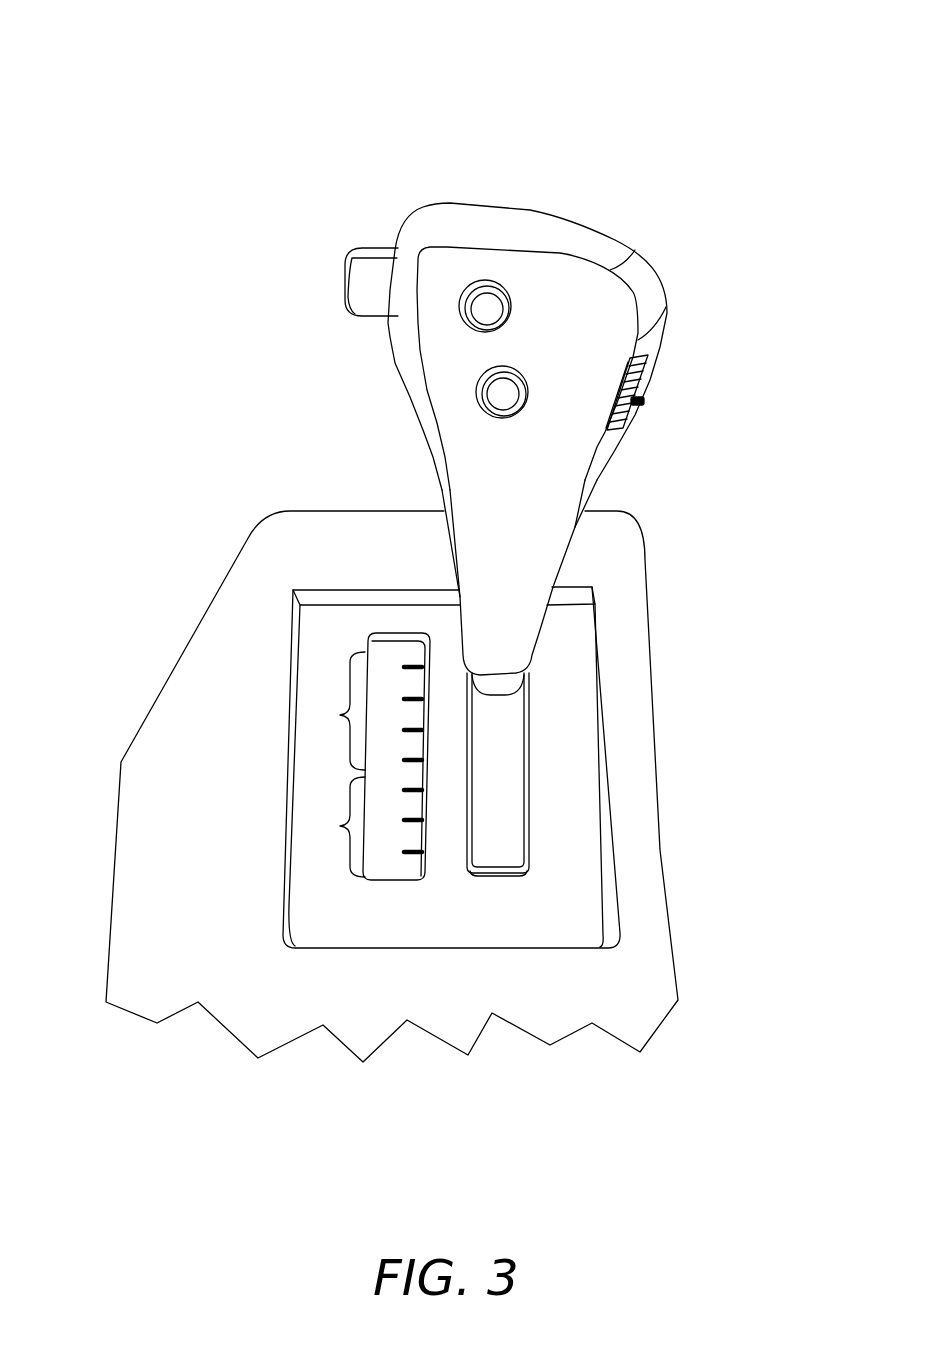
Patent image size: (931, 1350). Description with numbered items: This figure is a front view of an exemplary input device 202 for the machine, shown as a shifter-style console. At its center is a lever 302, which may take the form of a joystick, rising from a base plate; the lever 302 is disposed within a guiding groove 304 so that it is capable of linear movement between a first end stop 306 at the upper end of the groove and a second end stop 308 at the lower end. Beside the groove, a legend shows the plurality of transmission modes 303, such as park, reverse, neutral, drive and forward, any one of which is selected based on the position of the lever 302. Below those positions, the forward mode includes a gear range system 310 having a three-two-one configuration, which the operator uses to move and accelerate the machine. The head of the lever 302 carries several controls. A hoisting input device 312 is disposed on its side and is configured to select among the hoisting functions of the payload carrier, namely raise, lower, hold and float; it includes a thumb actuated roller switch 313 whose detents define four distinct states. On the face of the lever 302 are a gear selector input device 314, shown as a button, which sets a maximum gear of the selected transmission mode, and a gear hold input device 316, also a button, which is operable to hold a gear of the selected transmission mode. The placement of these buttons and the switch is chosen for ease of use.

The input device 202 is at (415, 531).
The lever 302 is at (595, 225).
The transmission modes 303 is at (340, 715).
The guiding groove 304 is at (533, 790).
The first end stop 306 is at (540, 674).
The second end stop 308 is at (512, 885).
The gear range system 310 is at (340, 826).
The hoisting input device 312 is at (647, 367).
The roller switch 313 is at (632, 410).
The gear selector input device 314 is at (485, 309).
The gear hold input device 316 is at (503, 394).